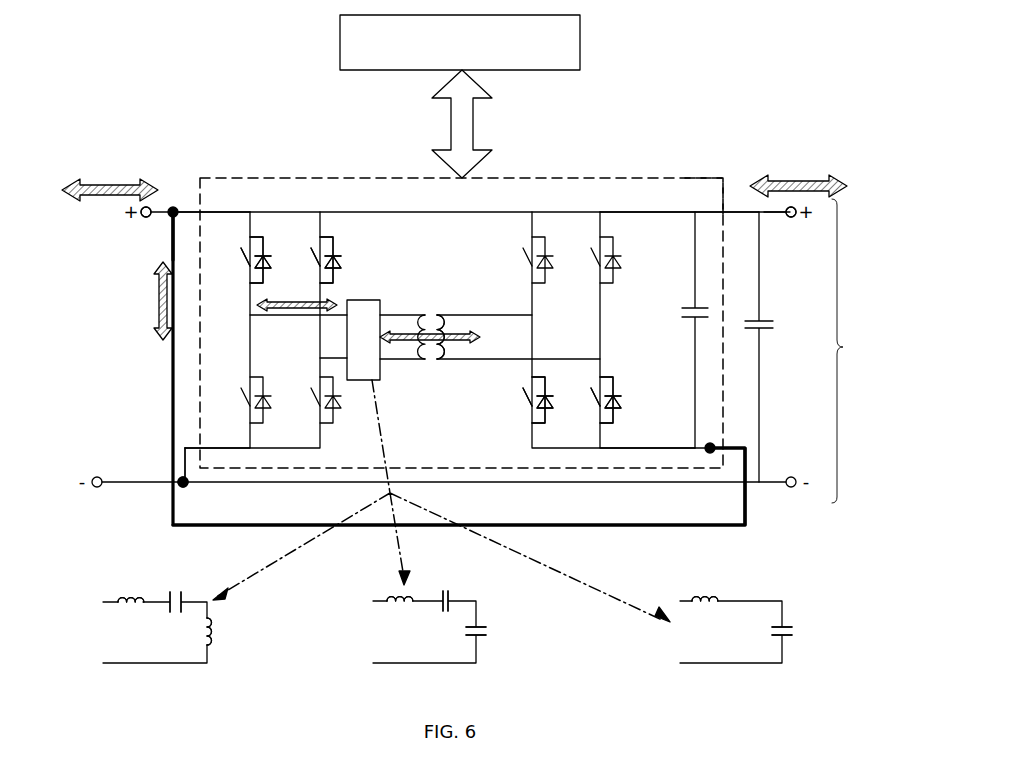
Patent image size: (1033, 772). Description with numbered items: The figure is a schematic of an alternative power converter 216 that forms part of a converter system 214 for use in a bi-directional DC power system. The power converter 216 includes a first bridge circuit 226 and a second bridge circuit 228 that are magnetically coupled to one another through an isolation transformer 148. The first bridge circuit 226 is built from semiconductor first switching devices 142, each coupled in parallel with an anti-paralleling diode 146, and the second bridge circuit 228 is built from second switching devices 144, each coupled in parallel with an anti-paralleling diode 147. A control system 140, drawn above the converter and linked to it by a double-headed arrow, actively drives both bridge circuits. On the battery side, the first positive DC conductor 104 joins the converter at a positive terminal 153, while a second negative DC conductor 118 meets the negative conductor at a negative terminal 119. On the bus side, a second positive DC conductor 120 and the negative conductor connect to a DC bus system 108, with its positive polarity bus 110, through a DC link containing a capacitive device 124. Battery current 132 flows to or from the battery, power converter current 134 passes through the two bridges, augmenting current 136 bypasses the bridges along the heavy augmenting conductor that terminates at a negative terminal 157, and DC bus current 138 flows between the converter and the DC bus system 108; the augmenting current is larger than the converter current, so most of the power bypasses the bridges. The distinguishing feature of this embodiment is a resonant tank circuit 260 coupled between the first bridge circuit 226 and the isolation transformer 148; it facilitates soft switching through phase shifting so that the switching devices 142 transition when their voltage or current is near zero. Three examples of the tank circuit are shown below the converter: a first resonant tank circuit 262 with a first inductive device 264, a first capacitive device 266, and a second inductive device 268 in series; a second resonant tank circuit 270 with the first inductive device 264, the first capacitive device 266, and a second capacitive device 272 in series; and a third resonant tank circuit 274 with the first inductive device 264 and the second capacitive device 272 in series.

The first positive DC conductor 104 is at (150, 219).
The DC bus system 108 is at (858, 351).
The positive polarity bus 110 is at (772, 215).
The second negative DC conductor 118 is at (185, 448).
The negative terminal 119 is at (181, 486).
The second positive DC conductor 120 is at (733, 210).
The capacitive device 124 is at (765, 330).
The battery current 132 is at (86, 194).
The power converter current 134 is at (443, 315).
The augmenting current 136 is at (157, 300).
The DC bus current 138 is at (797, 180).
The control system 140 is at (446, 52).
The first switching device 142 is at (243, 263).
The second switching device 144 is at (520, 400).
The anti-paralleling diode 146 is at (345, 257).
The anti-paralleling diode 147 is at (625, 400).
The isolation transformer 148 is at (427, 365).
The positive terminal 153 is at (170, 232).
The negative terminal 157 is at (705, 450).
The converter system 214 is at (530, 163).
The power converter 216 is at (680, 174).
The first bridge circuit 226 is at (263, 204).
The second bridge circuit 228 is at (580, 204).
The resonant tank circuit 260 is at (365, 299).
The first resonant tank circuit 262 is at (138, 642).
The first inductive device 264 is at (118, 598).
The first capacitive device 266 is at (170, 592).
The second inductive device 268 is at (215, 641).
The second resonant tank circuit 270 is at (408, 642).
The second capacitive device 272 is at (486, 620).
The third resonant tank circuit 274 is at (713, 642).